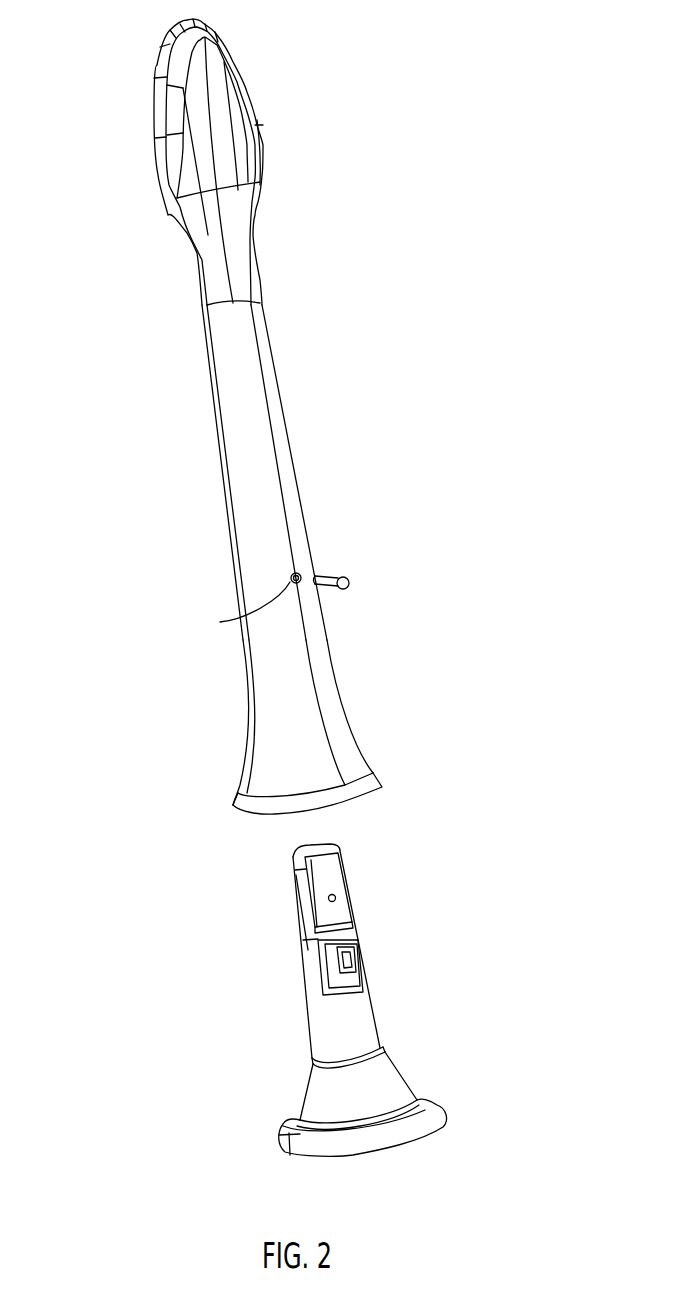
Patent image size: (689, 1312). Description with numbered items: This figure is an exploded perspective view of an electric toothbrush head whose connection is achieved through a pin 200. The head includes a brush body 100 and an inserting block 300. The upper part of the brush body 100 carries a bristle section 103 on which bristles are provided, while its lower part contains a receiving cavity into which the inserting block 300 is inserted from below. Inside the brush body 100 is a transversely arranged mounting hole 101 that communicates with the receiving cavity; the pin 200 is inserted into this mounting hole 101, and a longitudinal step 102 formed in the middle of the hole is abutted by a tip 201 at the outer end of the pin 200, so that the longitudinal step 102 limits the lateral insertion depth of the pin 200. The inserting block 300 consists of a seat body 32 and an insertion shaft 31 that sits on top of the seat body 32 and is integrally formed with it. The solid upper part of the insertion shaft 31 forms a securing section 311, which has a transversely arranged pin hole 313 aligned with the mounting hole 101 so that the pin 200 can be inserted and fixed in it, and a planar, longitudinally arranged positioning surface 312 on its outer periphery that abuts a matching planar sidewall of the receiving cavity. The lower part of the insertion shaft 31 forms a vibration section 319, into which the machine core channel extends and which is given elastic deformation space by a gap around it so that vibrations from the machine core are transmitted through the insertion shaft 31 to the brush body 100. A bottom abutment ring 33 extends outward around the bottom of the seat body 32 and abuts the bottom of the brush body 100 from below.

The brush body 100 is at (245, 507).
The mounting hole 101 is at (224, 614).
The longitudinal step 102 is at (300, 573).
The bristle section 103 is at (165, 166).
The pin 200 is at (328, 590).
The tip 201 is at (348, 580).
The inserting block 300 is at (370, 957).
The insertion shaft 31 is at (301, 938).
The securing section 311 is at (308, 898).
The positioning surface 312 is at (334, 880).
The pin hole 313 is at (338, 893).
The vibration section 319 is at (315, 977).
The seat body 32 is at (303, 1095).
The bottom abutment ring 33 is at (433, 1126).